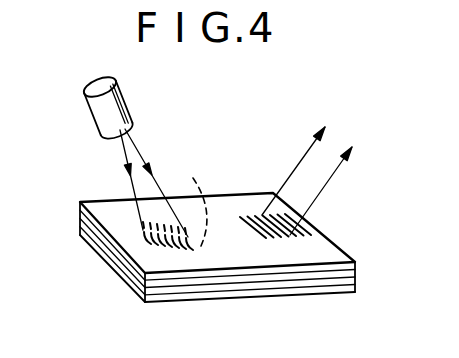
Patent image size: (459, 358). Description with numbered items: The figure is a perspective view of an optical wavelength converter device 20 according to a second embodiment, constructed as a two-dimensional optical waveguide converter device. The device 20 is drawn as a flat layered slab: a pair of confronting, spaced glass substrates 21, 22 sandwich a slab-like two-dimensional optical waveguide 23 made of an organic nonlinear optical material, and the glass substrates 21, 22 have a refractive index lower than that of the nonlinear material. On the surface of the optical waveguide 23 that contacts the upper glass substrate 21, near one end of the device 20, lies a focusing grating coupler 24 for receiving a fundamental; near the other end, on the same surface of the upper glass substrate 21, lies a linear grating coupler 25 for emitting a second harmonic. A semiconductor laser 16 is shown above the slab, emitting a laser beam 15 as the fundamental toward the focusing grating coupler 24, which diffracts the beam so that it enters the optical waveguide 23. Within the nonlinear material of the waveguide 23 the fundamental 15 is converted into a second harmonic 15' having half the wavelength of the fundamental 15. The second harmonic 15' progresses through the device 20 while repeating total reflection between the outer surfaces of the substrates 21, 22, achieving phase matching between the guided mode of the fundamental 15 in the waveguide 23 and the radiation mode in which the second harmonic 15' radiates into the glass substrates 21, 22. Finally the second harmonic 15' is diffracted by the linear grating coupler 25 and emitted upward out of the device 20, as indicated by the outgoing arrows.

The laser beam 15 is at (154, 172).
The second harmonic 15' is at (324, 181).
The semiconductor laser 16 is at (100, 131).
The optical wavelength converter device 20 is at (217, 217).
The glass substrate 21 is at (275, 257).
The glass substrate 22 is at (193, 295).
The two-dimensional optical waveguide 23 is at (240, 283).
The focusing grating coupler 24 is at (175, 201).
The linear grating coupler 25 is at (251, 214).